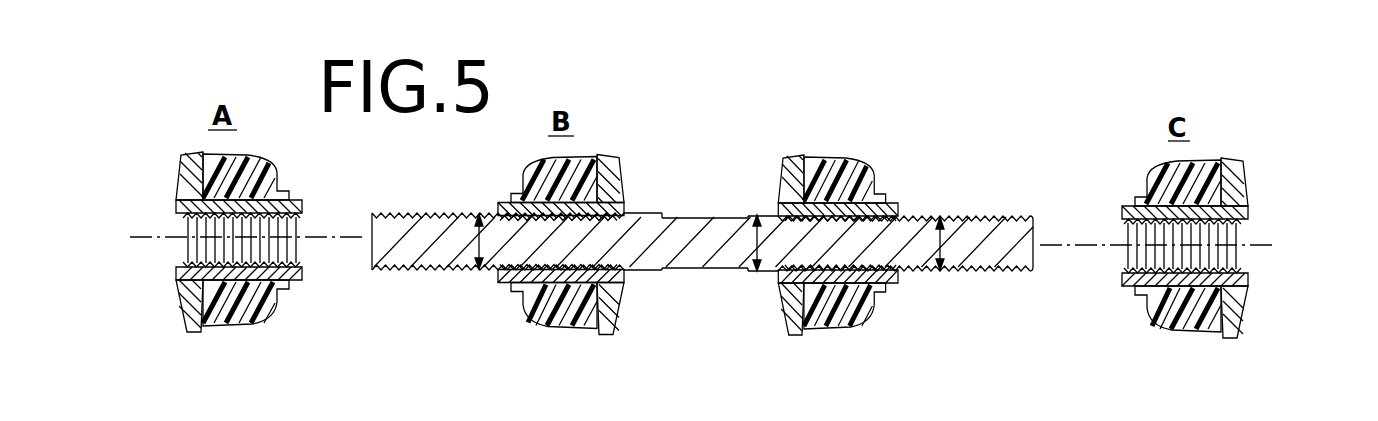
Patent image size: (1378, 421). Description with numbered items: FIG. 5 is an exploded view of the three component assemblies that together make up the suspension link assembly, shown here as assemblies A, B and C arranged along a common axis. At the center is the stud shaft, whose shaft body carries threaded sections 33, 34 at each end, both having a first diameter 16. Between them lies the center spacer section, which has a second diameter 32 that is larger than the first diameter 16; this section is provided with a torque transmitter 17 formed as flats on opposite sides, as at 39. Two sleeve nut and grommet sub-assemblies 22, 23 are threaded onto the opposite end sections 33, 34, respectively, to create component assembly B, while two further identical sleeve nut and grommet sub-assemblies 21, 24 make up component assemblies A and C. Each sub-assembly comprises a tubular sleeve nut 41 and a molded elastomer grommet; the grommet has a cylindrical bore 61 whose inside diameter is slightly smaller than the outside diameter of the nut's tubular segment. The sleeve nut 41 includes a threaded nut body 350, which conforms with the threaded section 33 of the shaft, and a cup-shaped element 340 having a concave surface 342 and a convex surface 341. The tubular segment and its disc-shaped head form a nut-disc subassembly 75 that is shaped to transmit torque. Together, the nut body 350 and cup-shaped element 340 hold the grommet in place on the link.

The first diameter 16 is at (477, 240).
The torque transmitter 17 is at (713, 273).
The sleeve nut and grommet sub-assembly 21 is at (267, 311).
The sleeve nut and grommet sub-assembly 22 is at (539, 317).
The sleeve nut and grommet sub-assembly 23 is at (860, 317).
The sleeve nut and grommet sub-assembly 24 is at (1187, 330).
The second diameter 32 is at (755, 220).
The threaded section 33 is at (448, 230).
The threaded section 34 is at (984, 238).
The flats 39 is at (681, 302).
The tubular sleeve nut 41 is at (520, 163).
The cylindrical bore 61 is at (540, 207).
The nut-disc subassembly 75 is at (900, 152).
The cup-shaped element 340 is at (183, 309).
The convex surface 341 is at (1258, 210).
The concave surface 342 is at (1222, 170).
The nut body 350 is at (240, 276).